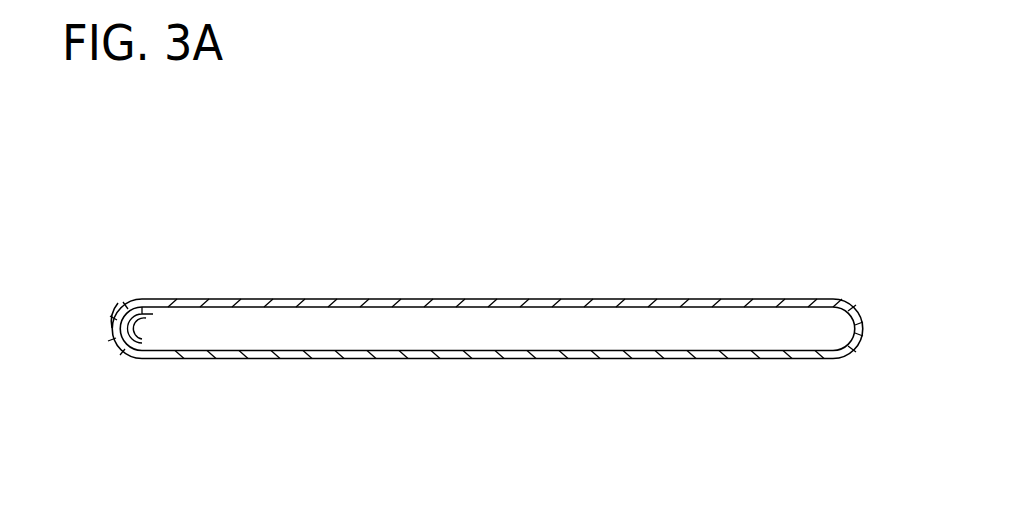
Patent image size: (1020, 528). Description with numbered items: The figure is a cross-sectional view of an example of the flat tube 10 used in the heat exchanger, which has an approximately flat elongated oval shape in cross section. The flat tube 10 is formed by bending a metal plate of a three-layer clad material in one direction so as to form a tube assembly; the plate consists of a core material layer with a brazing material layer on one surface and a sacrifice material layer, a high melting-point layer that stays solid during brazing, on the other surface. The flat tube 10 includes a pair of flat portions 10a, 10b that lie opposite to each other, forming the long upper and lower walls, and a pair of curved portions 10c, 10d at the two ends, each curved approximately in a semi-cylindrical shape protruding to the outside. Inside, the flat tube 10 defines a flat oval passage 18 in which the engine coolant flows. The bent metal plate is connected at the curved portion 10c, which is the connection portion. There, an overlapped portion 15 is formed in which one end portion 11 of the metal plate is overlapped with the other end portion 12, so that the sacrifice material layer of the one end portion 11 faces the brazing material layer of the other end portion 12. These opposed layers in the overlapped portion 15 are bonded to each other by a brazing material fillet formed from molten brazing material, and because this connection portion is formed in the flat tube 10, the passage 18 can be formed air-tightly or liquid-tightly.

The flat tube 10 is at (466, 306).
The flat portion 10a is at (470, 299).
The flat portion 10b is at (511, 354).
The curved portion 10c is at (104, 358).
The curved portion 10d is at (861, 343).
The one end portion 11 is at (112, 334).
The other end portion 12 is at (128, 325).
The overlapped portion 15 is at (103, 318).
The passage 18 is at (690, 328).